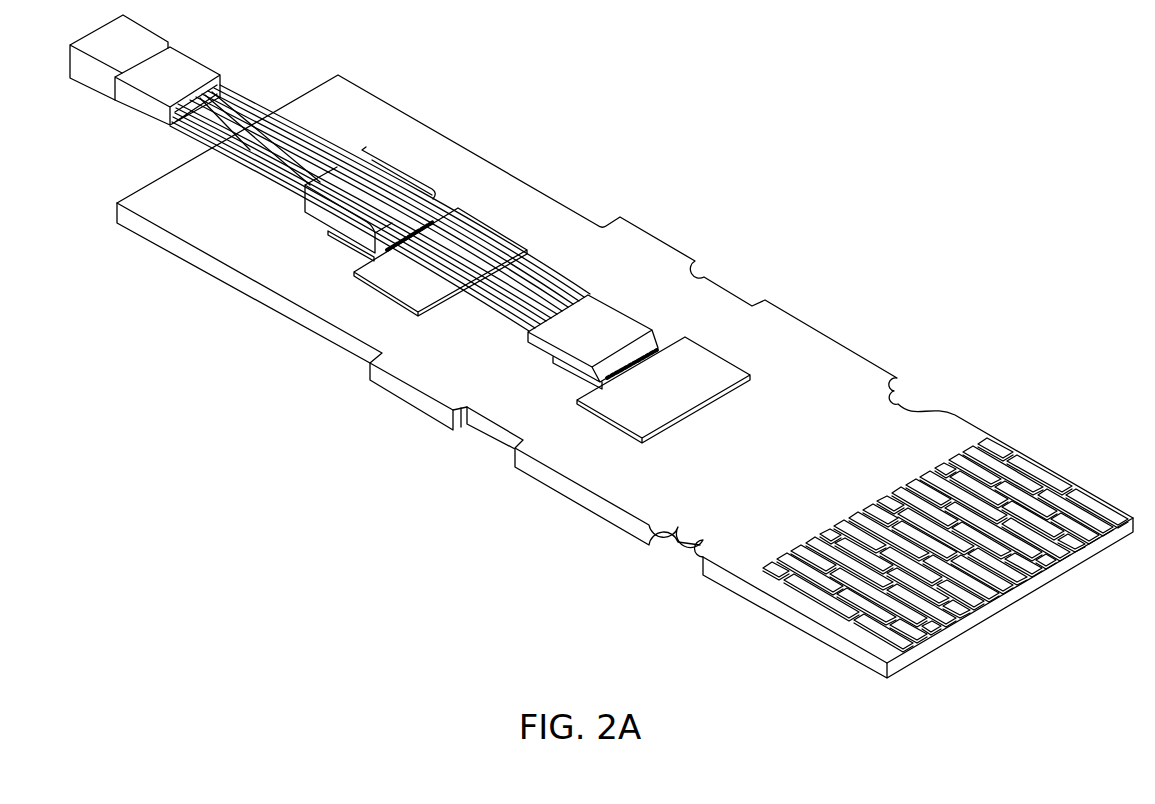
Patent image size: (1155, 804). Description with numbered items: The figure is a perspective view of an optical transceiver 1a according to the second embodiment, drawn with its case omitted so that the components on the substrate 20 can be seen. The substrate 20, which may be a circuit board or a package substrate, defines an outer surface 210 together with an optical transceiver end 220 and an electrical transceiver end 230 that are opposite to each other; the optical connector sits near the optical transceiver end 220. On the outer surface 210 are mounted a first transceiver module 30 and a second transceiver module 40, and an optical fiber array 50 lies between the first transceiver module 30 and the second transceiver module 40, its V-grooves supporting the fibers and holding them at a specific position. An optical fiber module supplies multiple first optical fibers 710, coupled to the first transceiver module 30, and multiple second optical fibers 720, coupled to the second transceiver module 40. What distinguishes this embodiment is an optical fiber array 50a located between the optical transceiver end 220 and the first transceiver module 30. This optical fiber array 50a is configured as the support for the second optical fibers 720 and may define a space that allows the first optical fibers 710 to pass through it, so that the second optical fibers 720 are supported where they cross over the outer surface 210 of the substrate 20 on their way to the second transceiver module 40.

The optical transceiver 1a is at (813, 86).
The substrate 20 is at (868, 355).
The outer surface 210 is at (797, 348).
The optical transceiver end 220 is at (159, 169).
The electrical transceiver end 230 is at (1078, 514).
The first transceiver module 30 is at (483, 227).
The second transceiver module 40 is at (693, 373).
The optical fiber array 50 is at (600, 328).
The optical fiber array 50a is at (347, 223).
The first optical fibers 710 is at (270, 183).
The second optical fibers 720 is at (523, 277).